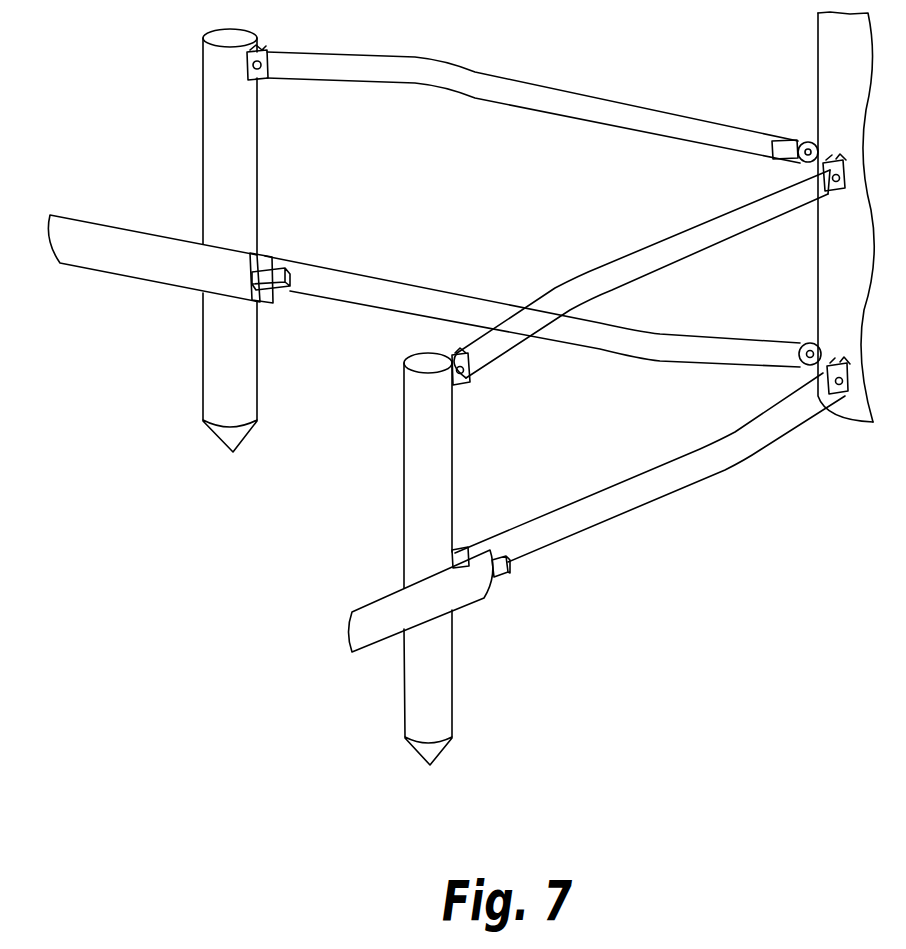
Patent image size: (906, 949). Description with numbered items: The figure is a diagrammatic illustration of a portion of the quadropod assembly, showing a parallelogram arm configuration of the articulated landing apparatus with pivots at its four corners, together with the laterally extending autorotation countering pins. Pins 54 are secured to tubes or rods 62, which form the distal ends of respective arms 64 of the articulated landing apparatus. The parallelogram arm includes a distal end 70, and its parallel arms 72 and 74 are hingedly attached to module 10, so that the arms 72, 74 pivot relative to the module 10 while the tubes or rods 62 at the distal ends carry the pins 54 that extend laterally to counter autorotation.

The module 10 is at (830, 257).
The pins 54 is at (437, 682).
The tubes or rods 62 is at (238, 143).
The arms 64 is at (585, 78).
The distal end 70 is at (410, 445).
The parallel arm 72 is at (633, 257).
The parallel arm 74 is at (672, 478).